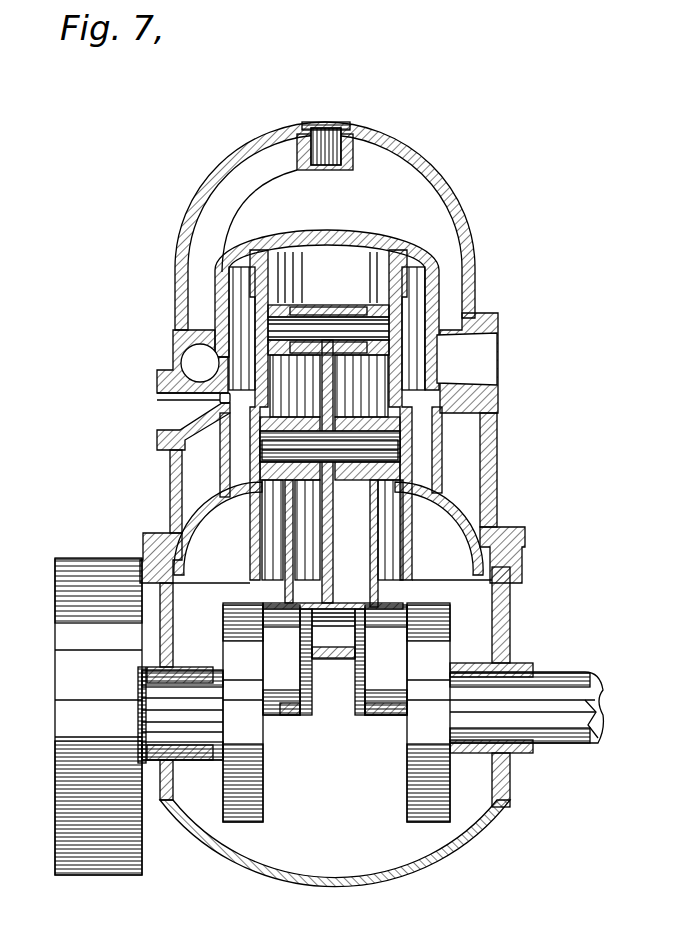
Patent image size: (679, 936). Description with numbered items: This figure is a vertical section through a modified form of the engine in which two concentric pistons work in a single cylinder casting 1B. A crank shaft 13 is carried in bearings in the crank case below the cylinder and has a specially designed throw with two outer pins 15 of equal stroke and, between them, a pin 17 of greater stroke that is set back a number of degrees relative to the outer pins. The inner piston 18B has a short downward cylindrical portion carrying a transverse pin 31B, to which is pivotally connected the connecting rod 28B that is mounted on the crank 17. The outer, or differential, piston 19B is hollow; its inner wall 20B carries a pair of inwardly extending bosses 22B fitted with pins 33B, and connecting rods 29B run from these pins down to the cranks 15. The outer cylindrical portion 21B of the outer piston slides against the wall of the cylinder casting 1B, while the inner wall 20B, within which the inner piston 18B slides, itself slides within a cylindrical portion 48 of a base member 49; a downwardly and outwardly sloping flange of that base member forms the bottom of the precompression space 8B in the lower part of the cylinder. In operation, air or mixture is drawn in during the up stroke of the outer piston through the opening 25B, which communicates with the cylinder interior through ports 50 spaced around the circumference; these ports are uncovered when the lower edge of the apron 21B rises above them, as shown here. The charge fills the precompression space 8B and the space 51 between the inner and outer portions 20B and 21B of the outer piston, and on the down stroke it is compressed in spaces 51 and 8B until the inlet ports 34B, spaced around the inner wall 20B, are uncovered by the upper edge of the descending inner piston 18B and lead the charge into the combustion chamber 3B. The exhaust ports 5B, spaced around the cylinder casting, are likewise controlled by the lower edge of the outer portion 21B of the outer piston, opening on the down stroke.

The cylinder casting 1B is at (435, 233).
The combustion chamber 3B is at (383, 192).
The outer or differential piston 19B is at (237, 267).
The inner piston 18B is at (354, 234).
The outer cylindrical portion of the outer piston 21B is at (440, 283).
The space between inner and outer portions of the outer piston 51 is at (245, 300).
The inlet ports 34B is at (390, 293).
The inner wall of the outer piston 20B is at (386, 370).
The transverse pin 31B is at (303, 318).
The connecting rods 29B is at (294, 551).
The bosses 22B is at (313, 420).
The precompression space 8B is at (262, 446).
The pins 33B is at (262, 462).
The connecting rod 28B is at (293, 540).
The crank pin 17 is at (357, 612).
The crank pin 15 is at (335, 660).
The crank shaft 13 is at (180, 715).
The opening 25B is at (170, 433).
The ports 50 is at (220, 399).
The cylindrical portion of the base member 48 is at (258, 558).
The exhaust ports 5B is at (433, 358).
The base member 49 is at (433, 530).